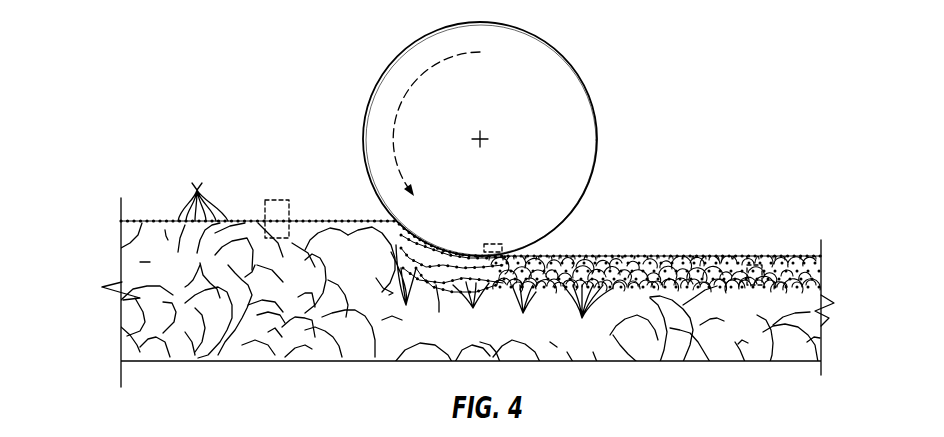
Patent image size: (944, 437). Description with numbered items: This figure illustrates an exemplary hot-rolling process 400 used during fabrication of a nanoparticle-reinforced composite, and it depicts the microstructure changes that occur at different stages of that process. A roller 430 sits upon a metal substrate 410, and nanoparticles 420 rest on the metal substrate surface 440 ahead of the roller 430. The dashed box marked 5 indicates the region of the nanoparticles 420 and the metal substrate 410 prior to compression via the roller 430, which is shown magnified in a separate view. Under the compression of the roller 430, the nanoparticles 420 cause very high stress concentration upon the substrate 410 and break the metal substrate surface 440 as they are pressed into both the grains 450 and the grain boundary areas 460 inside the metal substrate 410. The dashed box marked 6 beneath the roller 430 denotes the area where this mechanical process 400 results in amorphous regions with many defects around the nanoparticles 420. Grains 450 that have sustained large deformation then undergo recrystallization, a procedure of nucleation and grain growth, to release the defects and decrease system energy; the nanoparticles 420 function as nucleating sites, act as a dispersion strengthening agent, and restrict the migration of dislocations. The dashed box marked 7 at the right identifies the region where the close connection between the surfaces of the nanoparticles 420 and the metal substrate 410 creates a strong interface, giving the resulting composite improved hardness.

The hot-rolling process 400 is at (689, 48).
The metal substrate 410 is at (130, 270).
The nanoparticles 420 is at (395, 254).
The roller 430 is at (585, 124).
The metal substrate surface 440 is at (372, 228).
The grains 450 is at (610, 289).
The grain boundary areas 460 is at (465, 292).
The magnified region of FIG. 5 is at (280, 200).
The magnified region of FIG. 6 is at (493, 245).
The magnified region of FIG. 7 is at (751, 286).